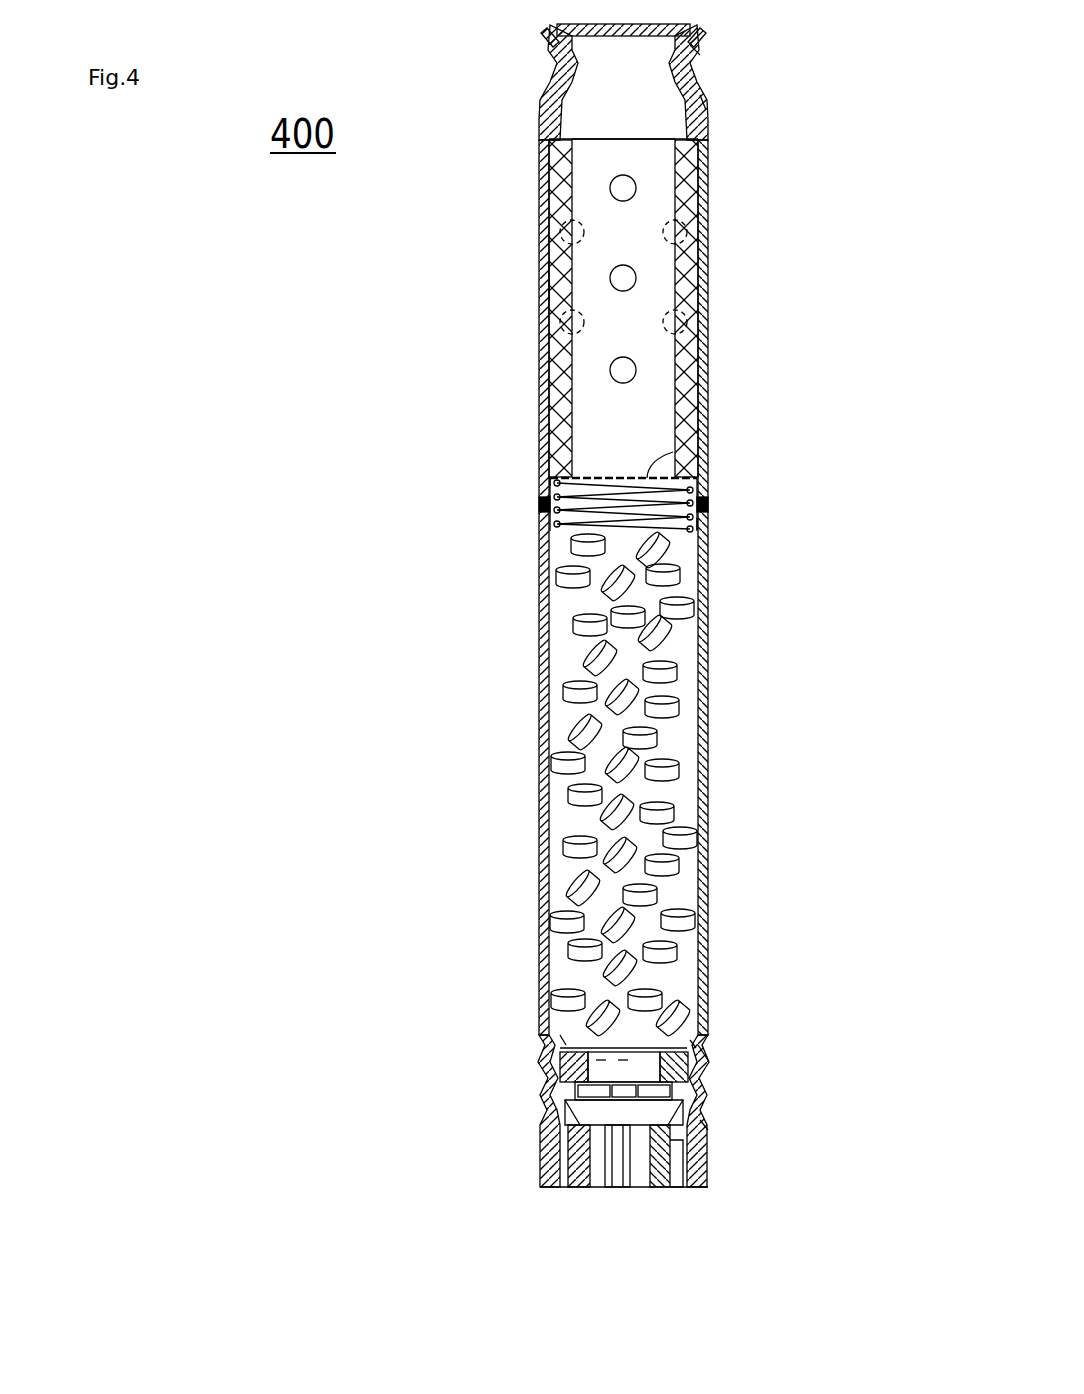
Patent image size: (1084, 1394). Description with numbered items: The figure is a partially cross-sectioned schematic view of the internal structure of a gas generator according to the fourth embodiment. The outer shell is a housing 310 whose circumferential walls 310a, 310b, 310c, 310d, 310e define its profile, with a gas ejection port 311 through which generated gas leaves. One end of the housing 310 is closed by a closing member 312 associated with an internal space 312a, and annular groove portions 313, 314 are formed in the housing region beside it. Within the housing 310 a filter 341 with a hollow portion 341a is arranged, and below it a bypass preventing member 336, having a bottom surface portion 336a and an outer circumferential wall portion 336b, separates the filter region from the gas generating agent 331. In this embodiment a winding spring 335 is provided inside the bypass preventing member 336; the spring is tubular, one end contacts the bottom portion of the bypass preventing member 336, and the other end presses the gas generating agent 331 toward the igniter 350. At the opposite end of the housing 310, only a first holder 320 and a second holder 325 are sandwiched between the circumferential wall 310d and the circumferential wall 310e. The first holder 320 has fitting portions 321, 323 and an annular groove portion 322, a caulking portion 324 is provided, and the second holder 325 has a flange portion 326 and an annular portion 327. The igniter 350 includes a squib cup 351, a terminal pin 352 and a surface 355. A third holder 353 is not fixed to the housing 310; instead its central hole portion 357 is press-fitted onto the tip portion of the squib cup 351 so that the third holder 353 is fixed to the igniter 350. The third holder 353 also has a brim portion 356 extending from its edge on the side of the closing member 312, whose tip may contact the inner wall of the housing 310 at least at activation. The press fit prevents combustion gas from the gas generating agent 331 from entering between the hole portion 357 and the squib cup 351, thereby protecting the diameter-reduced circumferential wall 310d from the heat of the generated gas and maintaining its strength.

The housing 310 is at (543, 690).
The circumferential wall 310a is at (690, 58).
The circumferential wall 310b is at (690, 100).
The circumferential wall 310c is at (540, 507).
The circumferential wall 310d is at (700, 1060).
The circumferential wall 310e is at (700, 1125).
The gas ejection port 311 is at (530, 318).
The closing member 312 is at (700, 27).
The internal space 312a is at (604, 116).
The annular groove portion 313 is at (548, 70).
The annular groove portion 314 is at (545, 35).
The first holder 320 is at (700, 1190).
The fitting portion 321 is at (560, 1205).
The annular groove portion 322 is at (540, 1130).
The fitting portion 323 is at (622, 1187).
The caulking portion 324 is at (540, 1085).
The second holder 325 is at (540, 1105).
The flange portion 326 is at (540, 1120).
The annular portion 327 is at (540, 1095).
The gas generating agent 331 is at (660, 705).
The winding spring 335 is at (540, 497).
The bypass preventing member 336 is at (603, 476).
The bottom surface portion 336a is at (673, 452).
The outer circumferential wall portion 336b is at (706, 522).
The filter 341 is at (700, 235).
The hollow portion 341a is at (655, 295).
The igniter 350 is at (705, 1110).
The squib cup 351 is at (622, 1058).
The terminal pin 352 is at (708, 1160).
The third holder 353 is at (540, 1055).
The surface 355 is at (692, 1045).
The brim portion 356 is at (565, 1040).
The hole portion 357 is at (603, 1055).